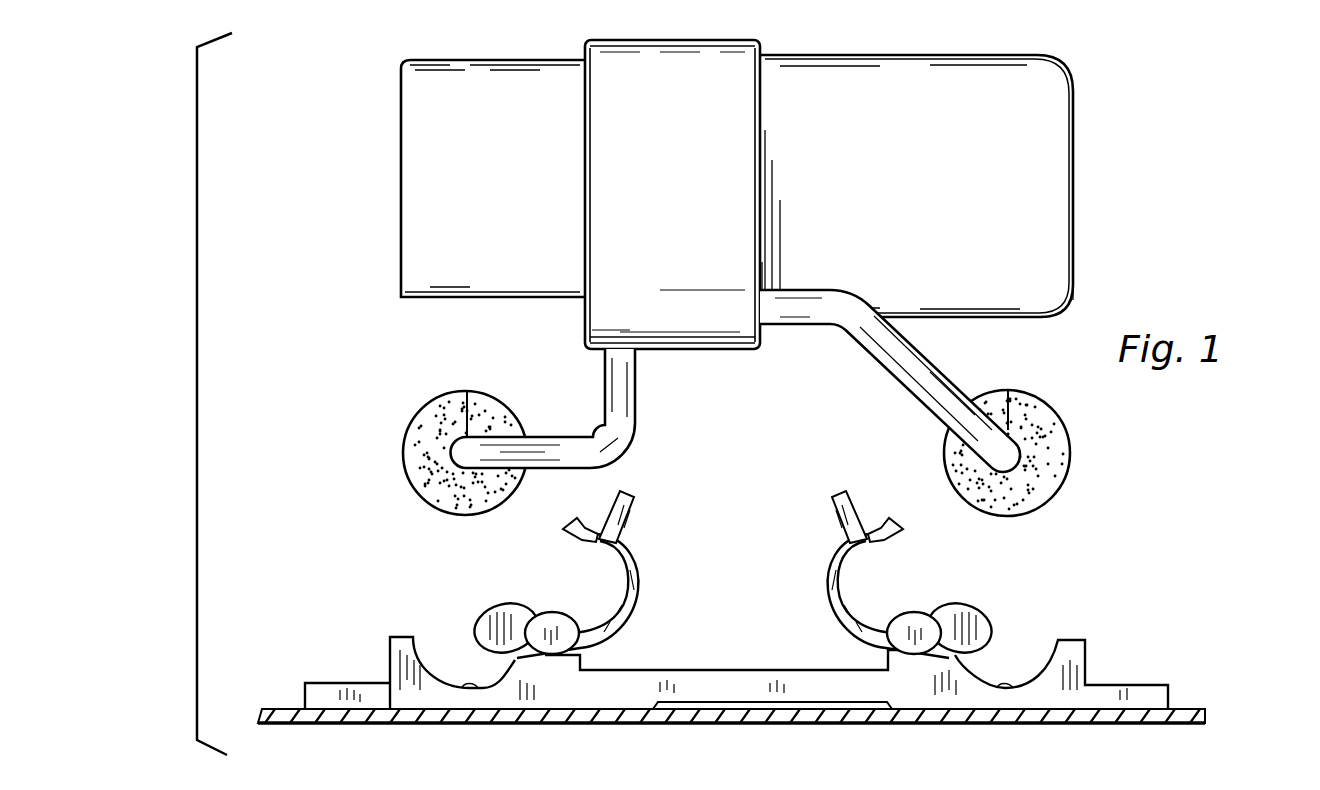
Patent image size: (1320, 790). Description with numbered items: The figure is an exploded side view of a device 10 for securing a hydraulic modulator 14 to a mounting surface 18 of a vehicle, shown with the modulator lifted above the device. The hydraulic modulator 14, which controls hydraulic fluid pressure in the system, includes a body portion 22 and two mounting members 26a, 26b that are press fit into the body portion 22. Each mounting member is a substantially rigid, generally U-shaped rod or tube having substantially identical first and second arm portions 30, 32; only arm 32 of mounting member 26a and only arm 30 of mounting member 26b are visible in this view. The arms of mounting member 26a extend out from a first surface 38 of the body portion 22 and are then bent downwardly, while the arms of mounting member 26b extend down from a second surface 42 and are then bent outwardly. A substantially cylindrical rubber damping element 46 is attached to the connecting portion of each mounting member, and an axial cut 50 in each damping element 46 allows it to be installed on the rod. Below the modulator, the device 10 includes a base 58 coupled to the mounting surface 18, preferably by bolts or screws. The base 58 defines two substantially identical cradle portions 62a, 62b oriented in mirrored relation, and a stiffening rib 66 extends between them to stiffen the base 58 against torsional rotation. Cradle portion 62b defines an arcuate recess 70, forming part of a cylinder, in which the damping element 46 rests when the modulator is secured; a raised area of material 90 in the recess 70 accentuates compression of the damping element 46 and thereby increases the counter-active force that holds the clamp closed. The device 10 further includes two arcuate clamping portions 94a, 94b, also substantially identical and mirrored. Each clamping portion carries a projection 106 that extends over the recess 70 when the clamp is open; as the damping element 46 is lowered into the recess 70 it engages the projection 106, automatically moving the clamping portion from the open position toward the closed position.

The device 10 is at (1236, 692).
The hydraulic modulator 14 is at (1128, 154).
The mounting surface 18 is at (1182, 706).
The body portion 22 is at (672, 57).
The mounting member 26a is at (902, 378).
The mounting member 26b is at (636, 412).
The first arm portion 30 is at (556, 445).
The second arm portion 32 is at (946, 394).
The first surface 38 is at (760, 268).
The second surface 42 is at (628, 308).
The damping element 46 is at (408, 463).
The axial cut 50 is at (458, 395).
The base 58 is at (332, 690).
The cradle portion 62a is at (966, 690).
The cradle portion 62b is at (415, 660).
The stiffening rib 66 is at (742, 682).
The arcuate recess 70 is at (512, 672).
The raised area of material 90 is at (468, 686).
The arcuate clamping portion 94a is at (834, 594).
The arcuate clamping portion 94b is at (634, 603).
The projection 106 is at (513, 620).